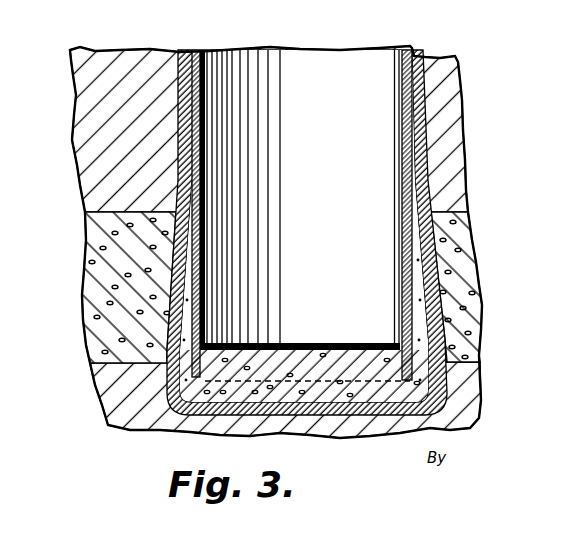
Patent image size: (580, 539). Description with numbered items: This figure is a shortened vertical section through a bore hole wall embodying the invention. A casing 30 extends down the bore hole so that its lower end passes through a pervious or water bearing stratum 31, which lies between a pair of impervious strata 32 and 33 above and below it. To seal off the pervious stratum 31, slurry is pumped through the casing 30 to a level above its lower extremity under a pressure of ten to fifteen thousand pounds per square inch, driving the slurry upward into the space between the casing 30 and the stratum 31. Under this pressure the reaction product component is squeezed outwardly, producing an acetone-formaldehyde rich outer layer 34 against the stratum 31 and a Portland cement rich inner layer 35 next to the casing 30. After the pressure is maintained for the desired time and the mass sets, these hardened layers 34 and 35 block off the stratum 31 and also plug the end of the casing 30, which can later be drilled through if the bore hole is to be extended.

The casing 30 is at (413, 44).
The pervious or water bearing stratum 31 is at (460, 253).
The impervious stratum 32 is at (453, 101).
The impervious stratum 33 is at (466, 405).
The acetone-formaldehyde rich outer layer 34 is at (444, 286).
The Portland cement rich inner layer 35 is at (430, 340).